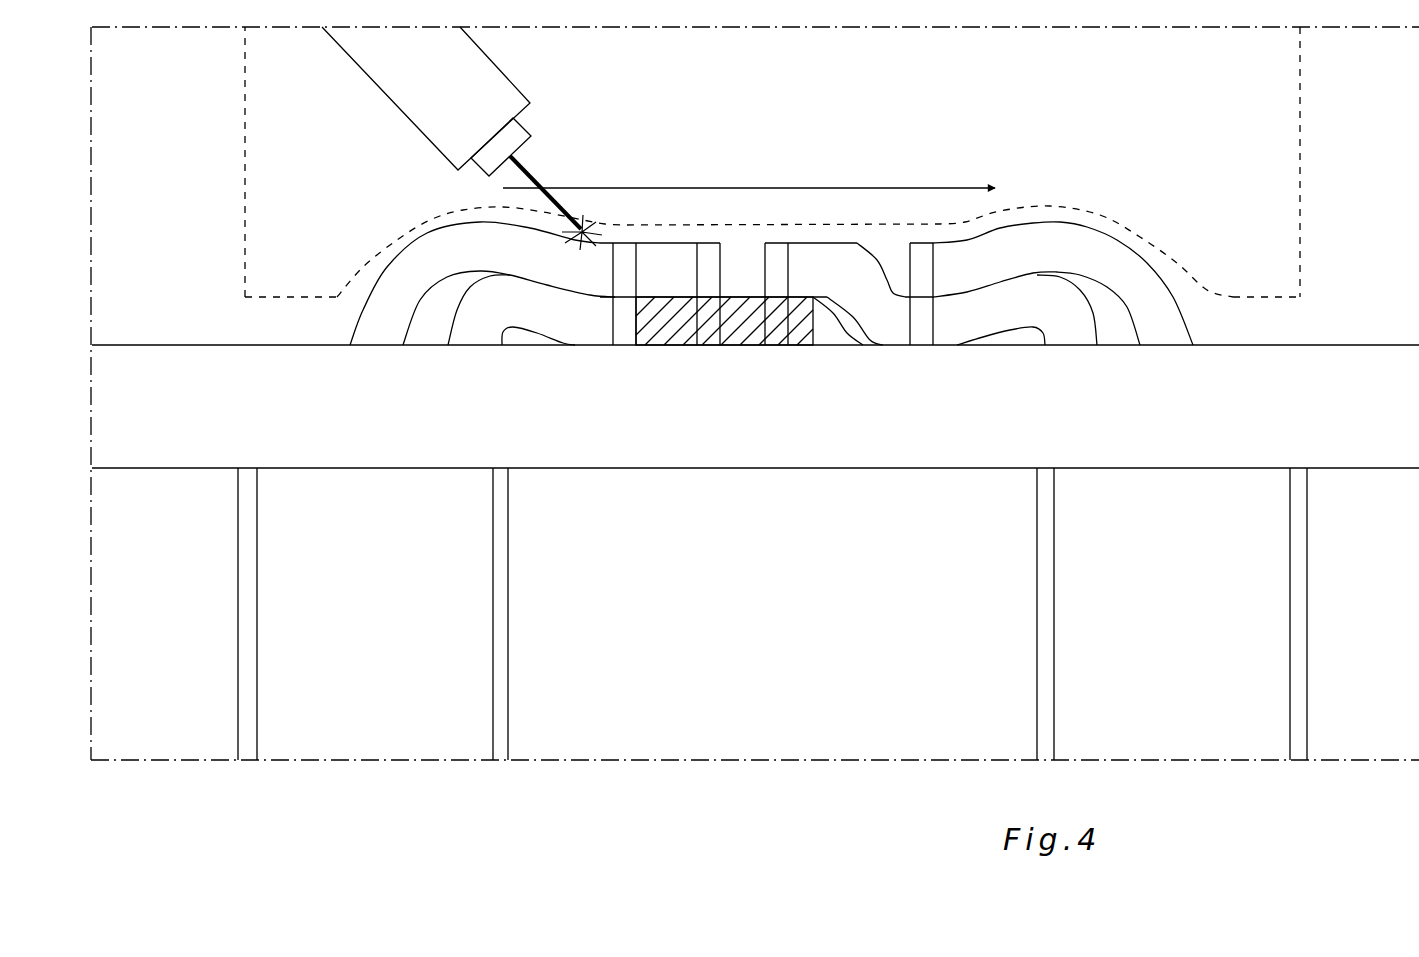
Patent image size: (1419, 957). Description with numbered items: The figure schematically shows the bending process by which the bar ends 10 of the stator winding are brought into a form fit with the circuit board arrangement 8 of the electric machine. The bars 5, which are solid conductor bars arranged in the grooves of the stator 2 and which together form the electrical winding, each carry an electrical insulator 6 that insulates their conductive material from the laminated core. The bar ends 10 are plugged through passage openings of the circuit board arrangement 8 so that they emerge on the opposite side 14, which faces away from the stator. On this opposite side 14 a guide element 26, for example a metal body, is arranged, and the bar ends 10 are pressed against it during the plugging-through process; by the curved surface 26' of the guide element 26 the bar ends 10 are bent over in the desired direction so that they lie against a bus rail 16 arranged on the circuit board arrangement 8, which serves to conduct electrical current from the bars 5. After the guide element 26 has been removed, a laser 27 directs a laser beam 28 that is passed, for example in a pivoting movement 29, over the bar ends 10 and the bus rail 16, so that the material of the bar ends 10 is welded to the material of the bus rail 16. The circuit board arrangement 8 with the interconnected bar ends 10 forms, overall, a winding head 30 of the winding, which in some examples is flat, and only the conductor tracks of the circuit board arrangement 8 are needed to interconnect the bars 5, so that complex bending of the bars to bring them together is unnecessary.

The stator 2 is at (1350, 700).
The bars 5 is at (380, 700).
The electrical insulator 6 is at (248, 663).
The circuit board arrangement 8 is at (1337, 345).
The bar ends 10 is at (377, 330).
The opposite side 14 is at (206, 343).
The bus rail 16 is at (740, 320).
The guide element 26 is at (815, 162).
The curved surface 26' is at (785, 251).
The laser 27 is at (488, 70).
The laser beam 28 is at (535, 170).
The pivoting movement 29 is at (753, 186).
The winding head 30 is at (205, 190).